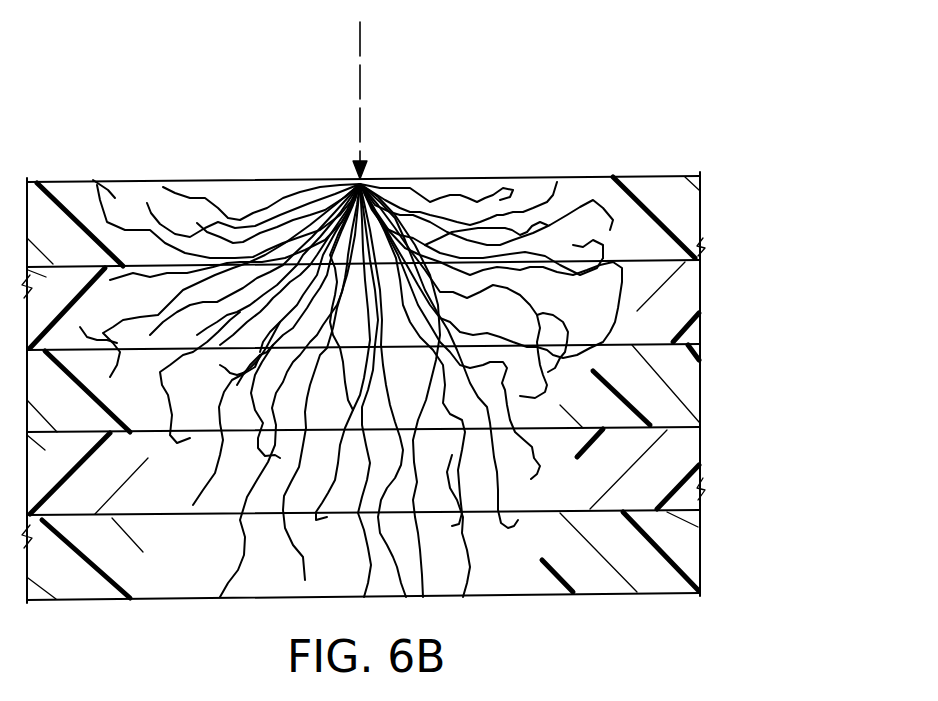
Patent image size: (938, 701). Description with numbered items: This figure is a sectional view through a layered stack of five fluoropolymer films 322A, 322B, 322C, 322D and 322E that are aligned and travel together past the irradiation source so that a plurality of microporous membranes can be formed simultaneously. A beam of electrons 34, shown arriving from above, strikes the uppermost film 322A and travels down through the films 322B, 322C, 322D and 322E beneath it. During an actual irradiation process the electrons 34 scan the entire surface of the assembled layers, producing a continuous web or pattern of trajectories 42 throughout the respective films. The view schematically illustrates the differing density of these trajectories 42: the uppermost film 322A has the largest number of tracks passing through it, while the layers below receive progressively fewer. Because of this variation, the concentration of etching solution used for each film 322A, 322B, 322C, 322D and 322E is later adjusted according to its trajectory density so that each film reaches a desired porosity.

The beam of electrons 34 is at (362, 99).
The trajectories 42 is at (185, 205).
The fluoropolymer film 322A is at (688, 213).
The fluoropolymer film 322B is at (685, 290).
The fluoropolymer film 322C is at (685, 370).
The fluoropolymer film 322D is at (680, 457).
The fluoropolymer film 322E is at (683, 545).